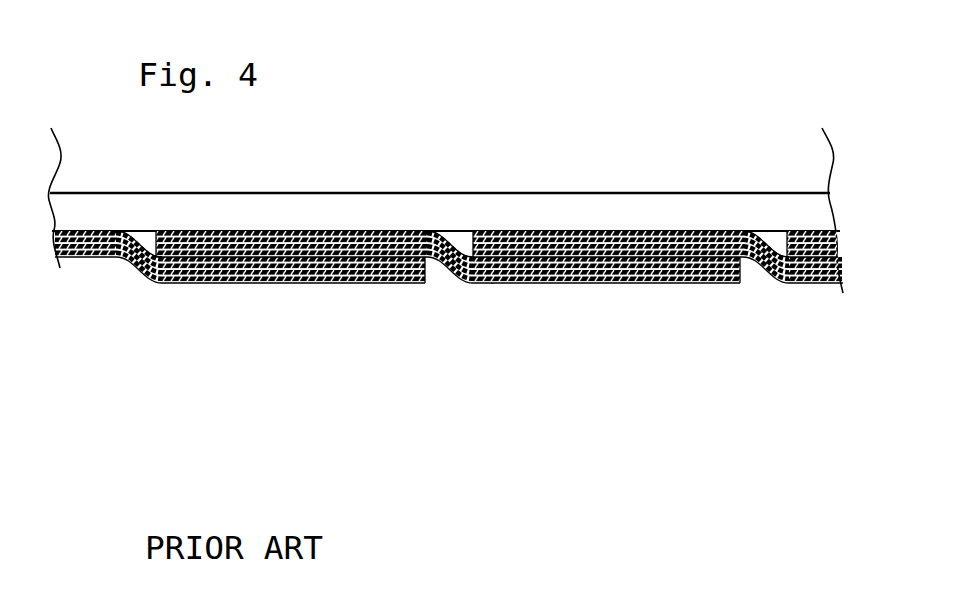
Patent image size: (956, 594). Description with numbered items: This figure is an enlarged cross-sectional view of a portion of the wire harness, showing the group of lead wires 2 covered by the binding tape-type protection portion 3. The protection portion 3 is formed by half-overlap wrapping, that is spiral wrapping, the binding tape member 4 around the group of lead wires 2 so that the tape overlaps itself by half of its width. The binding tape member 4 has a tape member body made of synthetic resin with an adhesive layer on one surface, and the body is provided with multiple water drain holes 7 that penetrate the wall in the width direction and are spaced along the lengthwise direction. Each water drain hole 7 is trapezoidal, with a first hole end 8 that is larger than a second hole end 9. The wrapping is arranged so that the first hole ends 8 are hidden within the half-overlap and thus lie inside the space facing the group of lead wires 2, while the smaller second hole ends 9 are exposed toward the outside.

The group of lead wires 2 is at (576, 200).
The binding tape-type protection portion 3 is at (492, 292).
The binding tape member 4 is at (586, 284).
The water drain holes 7 is at (373, 232).
The first hole end 8 is at (158, 232).
The second hole end 9 is at (423, 284).